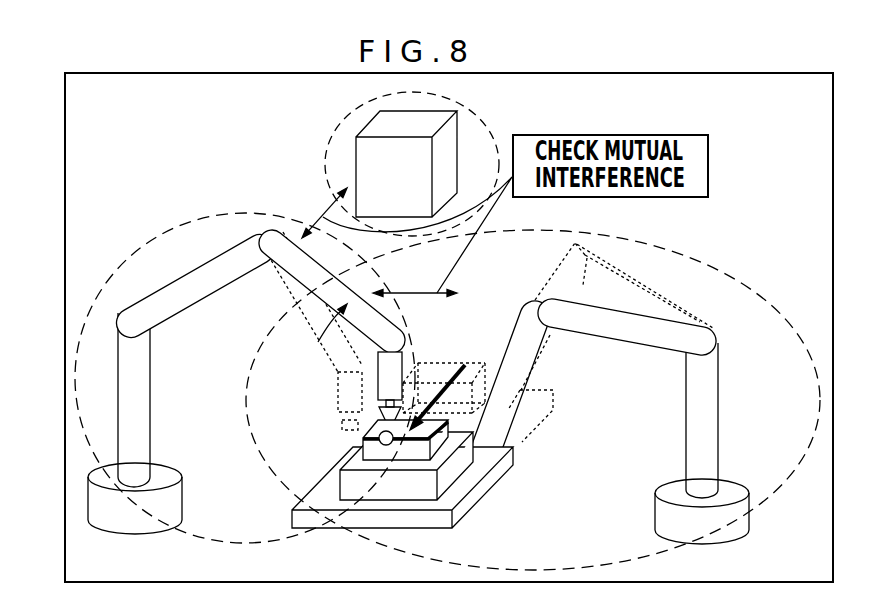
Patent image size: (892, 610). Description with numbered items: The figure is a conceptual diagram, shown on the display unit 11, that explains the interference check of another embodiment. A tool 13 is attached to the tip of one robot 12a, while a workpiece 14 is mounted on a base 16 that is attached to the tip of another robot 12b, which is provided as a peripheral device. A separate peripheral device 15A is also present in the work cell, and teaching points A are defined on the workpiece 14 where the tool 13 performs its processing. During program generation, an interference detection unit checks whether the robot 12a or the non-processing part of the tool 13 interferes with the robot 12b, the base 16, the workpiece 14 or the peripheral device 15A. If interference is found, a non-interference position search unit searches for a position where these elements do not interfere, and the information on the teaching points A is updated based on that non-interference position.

The display unit 11 is at (65, 466).
The robot 12a is at (184, 330).
The robot 12b is at (727, 386).
The tool 13 is at (388, 382).
The workpiece 14 is at (348, 488).
The peripheral device 15A is at (448, 143).
The base 16 is at (463, 507).
The teaching points A is at (392, 443).